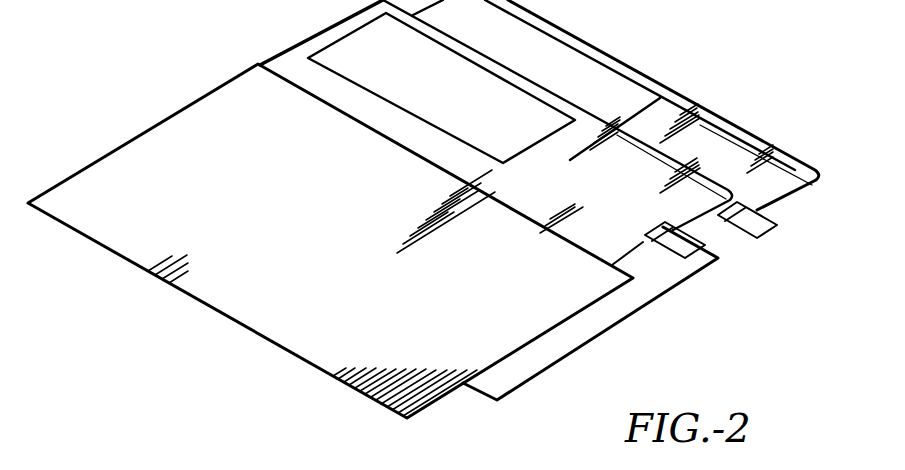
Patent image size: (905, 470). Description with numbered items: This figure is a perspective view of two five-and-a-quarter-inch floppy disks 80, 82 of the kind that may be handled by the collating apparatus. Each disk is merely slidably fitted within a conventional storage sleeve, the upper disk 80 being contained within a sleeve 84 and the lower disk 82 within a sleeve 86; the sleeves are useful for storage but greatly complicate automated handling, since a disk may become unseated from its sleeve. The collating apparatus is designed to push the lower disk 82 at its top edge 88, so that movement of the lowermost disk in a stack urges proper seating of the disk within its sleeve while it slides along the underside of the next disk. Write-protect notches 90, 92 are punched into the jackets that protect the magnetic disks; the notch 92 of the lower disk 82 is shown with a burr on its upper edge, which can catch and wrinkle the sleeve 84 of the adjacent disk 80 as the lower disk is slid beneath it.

The floppy disk 80 is at (677, 157).
The floppy disk 82 is at (790, 167).
The sleeve 84 is at (527, 332).
The sleeve 86 is at (620, 307).
The top edge 88 is at (637, 68).
The write-protect notch 90 is at (663, 245).
The write-protect notch 92 is at (750, 228).